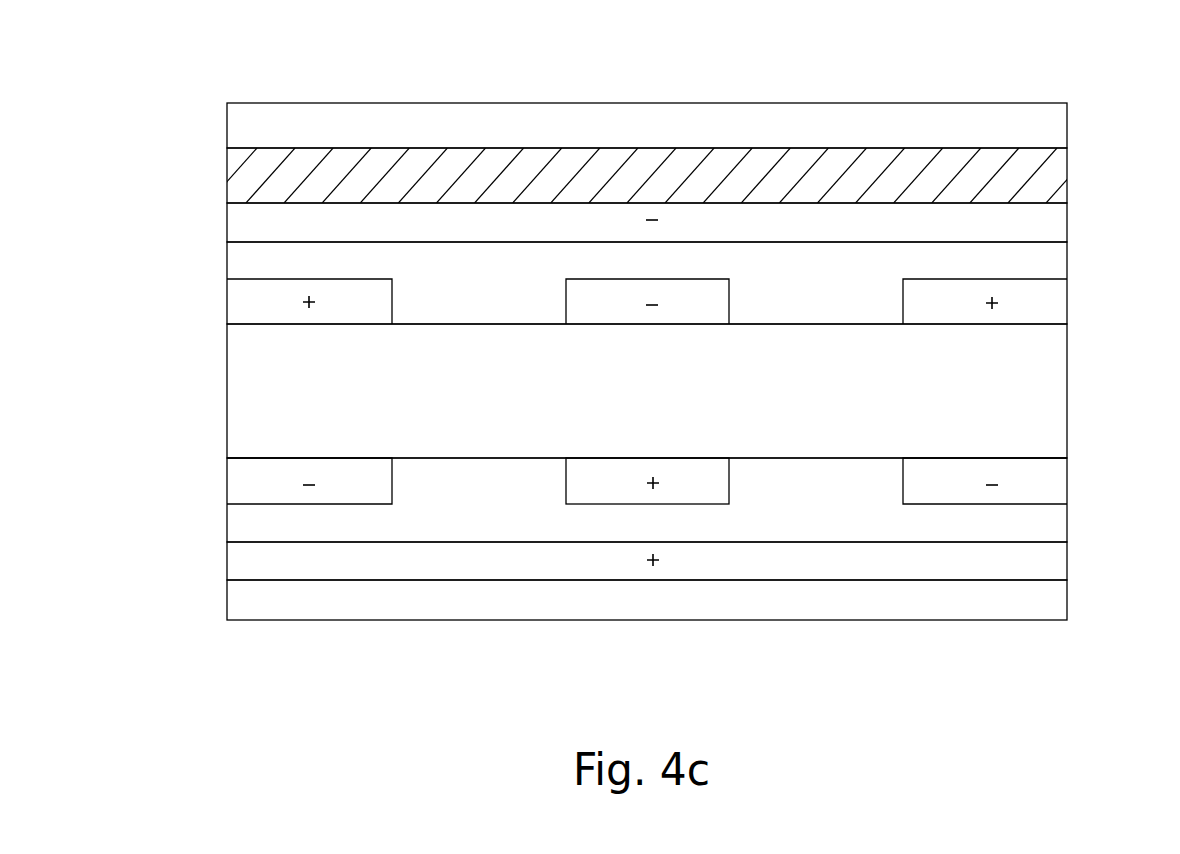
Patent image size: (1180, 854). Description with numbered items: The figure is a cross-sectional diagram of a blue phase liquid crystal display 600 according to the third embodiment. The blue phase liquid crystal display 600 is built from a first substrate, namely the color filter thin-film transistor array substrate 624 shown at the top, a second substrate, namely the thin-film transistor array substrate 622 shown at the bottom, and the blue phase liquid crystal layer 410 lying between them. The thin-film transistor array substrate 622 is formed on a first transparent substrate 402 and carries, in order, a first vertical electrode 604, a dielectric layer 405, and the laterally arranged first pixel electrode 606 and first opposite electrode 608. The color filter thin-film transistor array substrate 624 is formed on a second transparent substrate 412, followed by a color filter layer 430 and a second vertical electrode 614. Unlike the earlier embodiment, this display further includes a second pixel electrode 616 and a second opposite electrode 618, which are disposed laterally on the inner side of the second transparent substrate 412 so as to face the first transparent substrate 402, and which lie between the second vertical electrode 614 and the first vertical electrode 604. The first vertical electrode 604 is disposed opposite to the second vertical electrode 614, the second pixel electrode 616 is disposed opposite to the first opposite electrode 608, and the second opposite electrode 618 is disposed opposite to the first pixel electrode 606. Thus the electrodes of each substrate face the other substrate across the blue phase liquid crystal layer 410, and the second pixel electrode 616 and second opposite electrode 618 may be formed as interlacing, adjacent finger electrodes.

The blue phase liquid crystal display 600 is at (900, 60).
The first transparent substrate 402 is at (243, 605).
The first vertical electrode 604 is at (243, 567).
The dielectric layer 405 is at (243, 523).
The first pixel electrode 606 is at (597, 589).
The first opposite electrode 608 is at (698, 490).
The blue phase liquid crystal layer 410 is at (243, 402).
The second opposite electrode 618 is at (597, 169).
The second pixel electrode 616 is at (685, 310).
The second vertical electrode 614 is at (243, 222).
The color filter layer 430 is at (243, 180).
The second transparent substrate 412 is at (243, 127).
The thin-film transistor array substrate 622 is at (1092, 460).
The color filter thin-film transistor array substrate 624 is at (1092, 103).